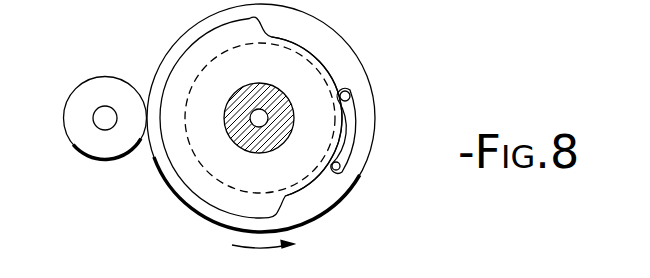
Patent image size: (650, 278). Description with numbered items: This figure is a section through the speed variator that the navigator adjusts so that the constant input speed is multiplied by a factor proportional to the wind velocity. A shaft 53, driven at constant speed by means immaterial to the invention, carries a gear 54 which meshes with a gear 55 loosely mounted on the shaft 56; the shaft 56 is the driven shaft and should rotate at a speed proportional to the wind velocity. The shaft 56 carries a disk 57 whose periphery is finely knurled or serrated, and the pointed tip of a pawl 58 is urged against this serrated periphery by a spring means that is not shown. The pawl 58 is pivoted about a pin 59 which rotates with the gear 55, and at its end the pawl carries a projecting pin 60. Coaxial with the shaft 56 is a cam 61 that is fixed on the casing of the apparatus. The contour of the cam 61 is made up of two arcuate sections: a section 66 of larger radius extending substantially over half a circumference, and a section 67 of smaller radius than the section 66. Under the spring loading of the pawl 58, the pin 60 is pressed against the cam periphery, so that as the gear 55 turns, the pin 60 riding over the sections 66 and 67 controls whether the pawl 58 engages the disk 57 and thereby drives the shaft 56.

The shaft 53 is at (100, 121).
The gear 54 is at (90, 92).
The gear 55 is at (313, 30).
The shaft 56 is at (262, 122).
The disk 57 is at (260, 118).
The pawl 58 is at (348, 130).
The pin 59 is at (343, 165).
The projecting pin 60 is at (349, 93).
The cam 61 is at (215, 42).
The section of larger radius 66 is at (175, 173).
The section of smaller radius 67 is at (310, 185).